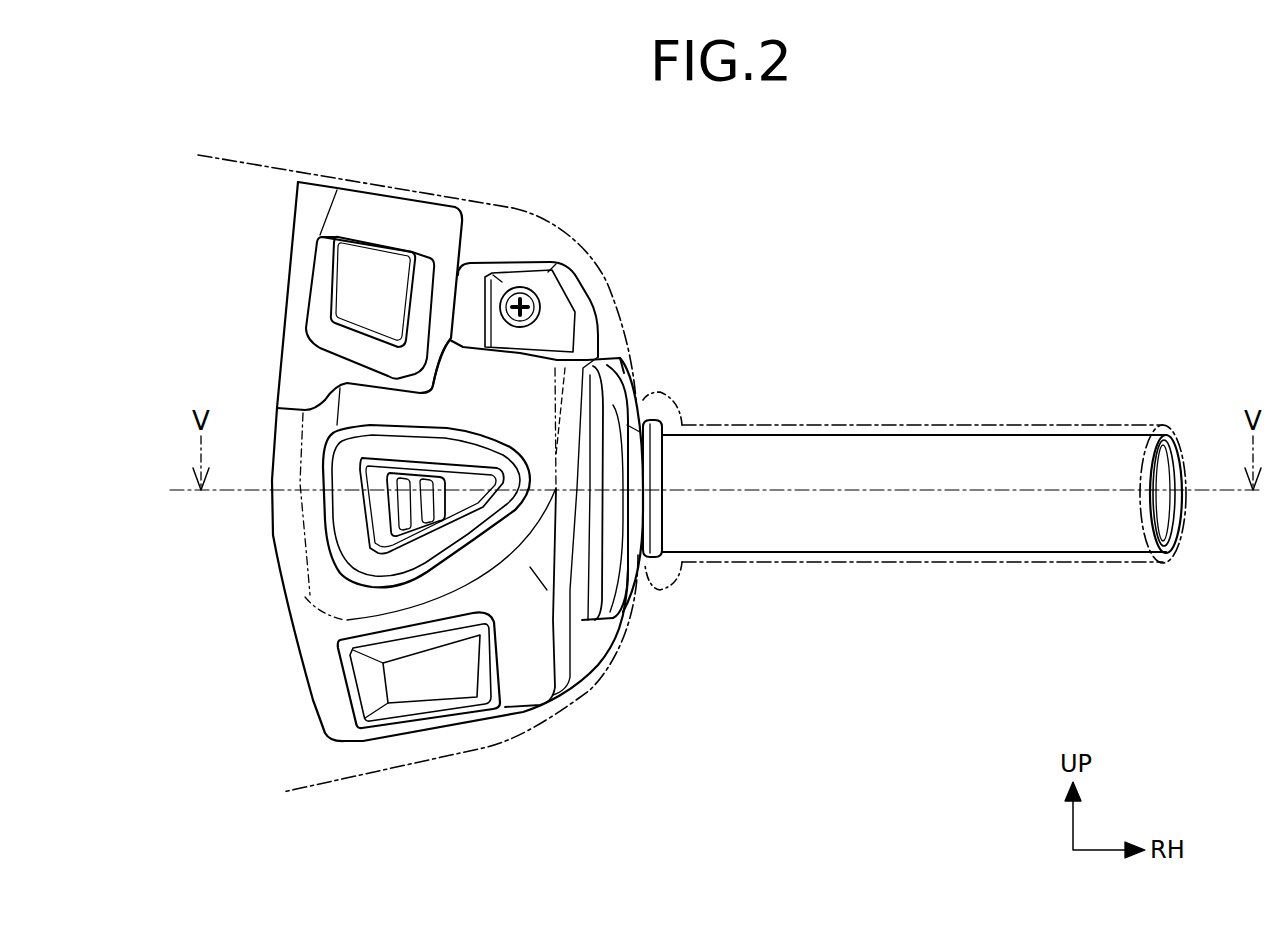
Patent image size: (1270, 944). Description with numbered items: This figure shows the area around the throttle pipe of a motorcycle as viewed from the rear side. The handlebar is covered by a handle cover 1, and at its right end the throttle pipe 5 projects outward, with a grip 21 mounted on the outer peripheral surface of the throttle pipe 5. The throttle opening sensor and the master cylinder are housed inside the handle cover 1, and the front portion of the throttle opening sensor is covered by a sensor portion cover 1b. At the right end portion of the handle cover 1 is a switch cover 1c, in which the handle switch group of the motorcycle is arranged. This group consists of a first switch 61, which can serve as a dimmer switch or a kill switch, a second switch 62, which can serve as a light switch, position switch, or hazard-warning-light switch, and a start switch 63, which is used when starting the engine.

The handle cover 1 is at (528, 210).
The sensor portion cover 1b is at (583, 338).
The switch cover 1c is at (307, 203).
The throttle pipe 5 is at (1083, 534).
The grip 21 is at (1048, 422).
The first switch 61 is at (382, 268).
The second switch 62 is at (447, 486).
The start switch 63 is at (447, 660).